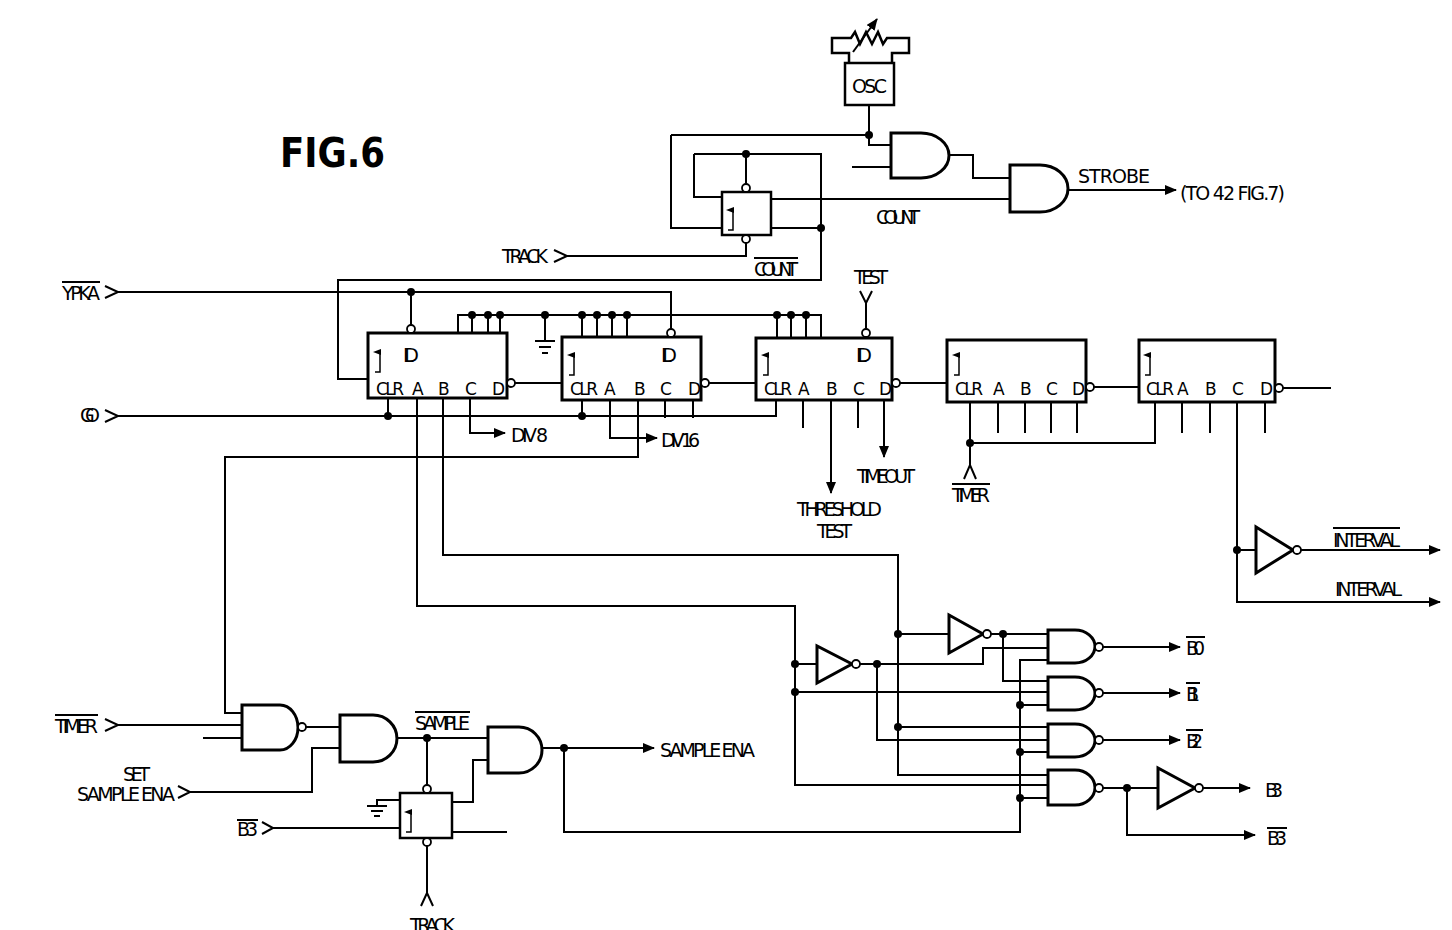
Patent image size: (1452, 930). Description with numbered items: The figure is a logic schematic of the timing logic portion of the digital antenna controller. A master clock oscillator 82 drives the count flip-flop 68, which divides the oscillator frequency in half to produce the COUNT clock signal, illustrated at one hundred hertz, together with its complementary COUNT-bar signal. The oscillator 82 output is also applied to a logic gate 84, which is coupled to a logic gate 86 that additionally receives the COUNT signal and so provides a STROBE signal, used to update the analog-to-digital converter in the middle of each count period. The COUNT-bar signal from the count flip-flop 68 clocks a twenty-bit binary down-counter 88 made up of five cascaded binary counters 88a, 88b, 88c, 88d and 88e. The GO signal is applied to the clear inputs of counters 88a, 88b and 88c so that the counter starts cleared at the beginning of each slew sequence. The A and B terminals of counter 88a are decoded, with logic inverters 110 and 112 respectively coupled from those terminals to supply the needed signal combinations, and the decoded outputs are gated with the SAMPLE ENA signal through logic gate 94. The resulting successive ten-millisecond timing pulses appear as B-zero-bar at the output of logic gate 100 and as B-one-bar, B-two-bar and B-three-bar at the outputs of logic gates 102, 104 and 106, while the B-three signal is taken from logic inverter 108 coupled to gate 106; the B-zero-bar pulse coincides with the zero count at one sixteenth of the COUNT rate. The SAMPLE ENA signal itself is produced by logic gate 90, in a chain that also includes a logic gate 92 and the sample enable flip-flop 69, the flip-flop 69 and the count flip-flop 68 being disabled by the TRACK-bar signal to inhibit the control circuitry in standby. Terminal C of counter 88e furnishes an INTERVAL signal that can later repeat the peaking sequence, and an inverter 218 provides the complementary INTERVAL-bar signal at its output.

The master clock oscillator 82 is at (906, 104).
The logic gate 84 is at (940, 137).
The logic gate 86 is at (1064, 172).
The count flip-flop 68 is at (777, 188).
The binary down-counter 88 is at (930, 309).
The binary counter 88a is at (507, 394).
The binary counter 88b is at (701, 362).
The binary counter 88c is at (892, 360).
The binary counter 88d is at (1086, 366).
The binary counter 88e is at (1275, 366).
The inverter 218 is at (1284, 541).
The NAND gate 92 is at (295, 701).
The logic gate 94 is at (396, 718).
The sample enable flip-flop 69 is at (457, 788).
The logic gate 90 is at (541, 738).
The logic inverter 110 is at (838, 657).
The logic inverter 112 is at (970, 627).
The logic gate 100 is at (1090, 637).
The logic gate 102 is at (1090, 684).
The logic gate 104 is at (1090, 731).
The logic gate 106 is at (1090, 778).
The logic inverter 108 is at (1180, 782).